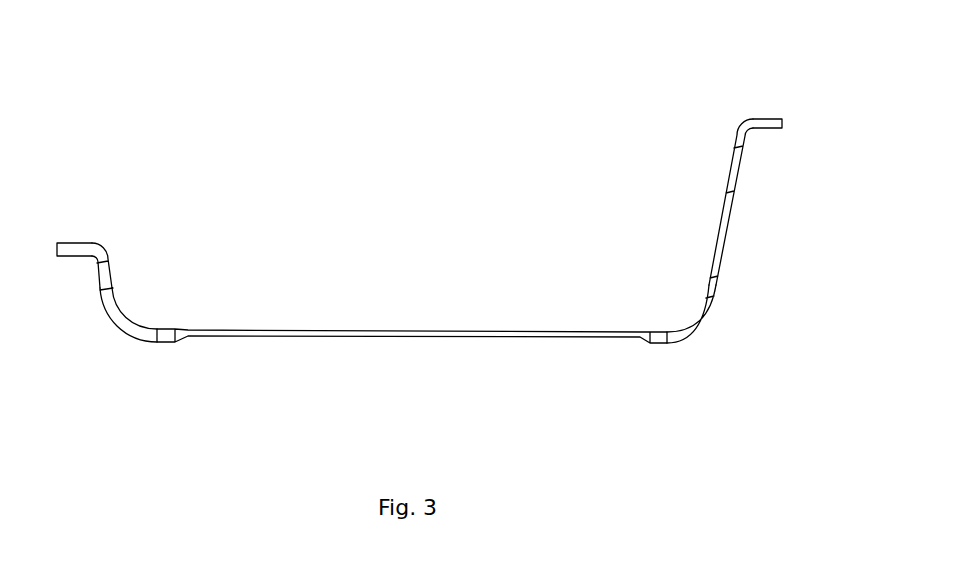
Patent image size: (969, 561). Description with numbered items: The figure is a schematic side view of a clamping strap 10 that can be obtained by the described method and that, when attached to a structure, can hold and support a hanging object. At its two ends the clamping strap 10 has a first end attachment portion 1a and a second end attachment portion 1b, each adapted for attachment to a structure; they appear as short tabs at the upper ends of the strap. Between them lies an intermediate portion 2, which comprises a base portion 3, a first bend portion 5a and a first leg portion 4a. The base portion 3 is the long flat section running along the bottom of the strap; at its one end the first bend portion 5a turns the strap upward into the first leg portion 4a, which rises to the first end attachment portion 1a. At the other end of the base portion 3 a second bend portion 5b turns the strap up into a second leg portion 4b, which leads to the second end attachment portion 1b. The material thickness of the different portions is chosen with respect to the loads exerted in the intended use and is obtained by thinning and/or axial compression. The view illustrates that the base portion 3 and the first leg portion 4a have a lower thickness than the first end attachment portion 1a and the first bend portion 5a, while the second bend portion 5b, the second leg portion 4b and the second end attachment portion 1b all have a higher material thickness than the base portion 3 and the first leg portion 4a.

The clamping strap 10 is at (157, 145).
The first end attachment portion 1a is at (755, 120).
The second end attachment portion 1b is at (75, 247).
The intermediate portion 2 is at (412, 360).
The base portion 3 is at (412, 301).
The first leg portion 4a is at (728, 192).
The second leg portion 4b is at (102, 293).
The first bend portion 5a is at (703, 318).
The second bend portion 5b is at (142, 327).